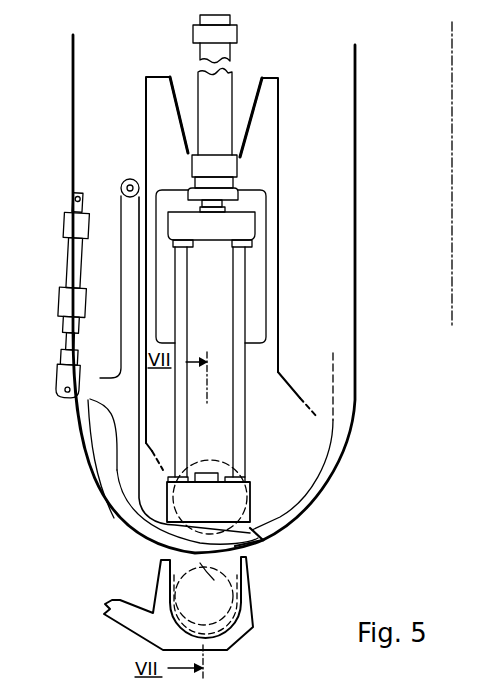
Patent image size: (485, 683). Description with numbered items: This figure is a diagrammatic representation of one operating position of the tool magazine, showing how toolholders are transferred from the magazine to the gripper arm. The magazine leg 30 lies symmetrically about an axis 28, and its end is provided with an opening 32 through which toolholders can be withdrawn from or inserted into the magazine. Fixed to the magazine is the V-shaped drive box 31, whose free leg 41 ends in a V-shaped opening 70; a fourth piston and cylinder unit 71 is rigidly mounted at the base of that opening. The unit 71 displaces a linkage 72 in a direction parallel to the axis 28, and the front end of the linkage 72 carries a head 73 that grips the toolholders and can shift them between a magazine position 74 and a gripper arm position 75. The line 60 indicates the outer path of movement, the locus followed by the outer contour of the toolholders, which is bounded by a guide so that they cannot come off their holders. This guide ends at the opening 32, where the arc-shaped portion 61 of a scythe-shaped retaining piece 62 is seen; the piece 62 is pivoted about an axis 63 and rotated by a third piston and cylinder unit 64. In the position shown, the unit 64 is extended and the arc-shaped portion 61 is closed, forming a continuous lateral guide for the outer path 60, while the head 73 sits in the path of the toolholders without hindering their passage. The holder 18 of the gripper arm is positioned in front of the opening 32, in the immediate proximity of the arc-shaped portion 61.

The holder 18 is at (247, 631).
The axis 28 is at (451, 47).
The leg of the magazine 30 is at (333, 305).
The drive box 31 is at (277, 407).
The opening 32 is at (250, 538).
The leg of the drive box 41 is at (272, 133).
The outer path of movement 60 is at (318, 440).
The arc-shaped portion 61 is at (147, 528).
The scythe-shaped retaining piece 62 is at (123, 447).
The axis 63 is at (123, 185).
The third piston and cylinder unit 64 is at (82, 272).
The V-shaped opening 70 is at (242, 100).
The fourth piston and cylinder unit 71 is at (208, 92).
The linkage 72 is at (243, 283).
The head 73 is at (251, 494).
The magazine position 74 is at (218, 498).
The gripper arm position 75 is at (215, 584).